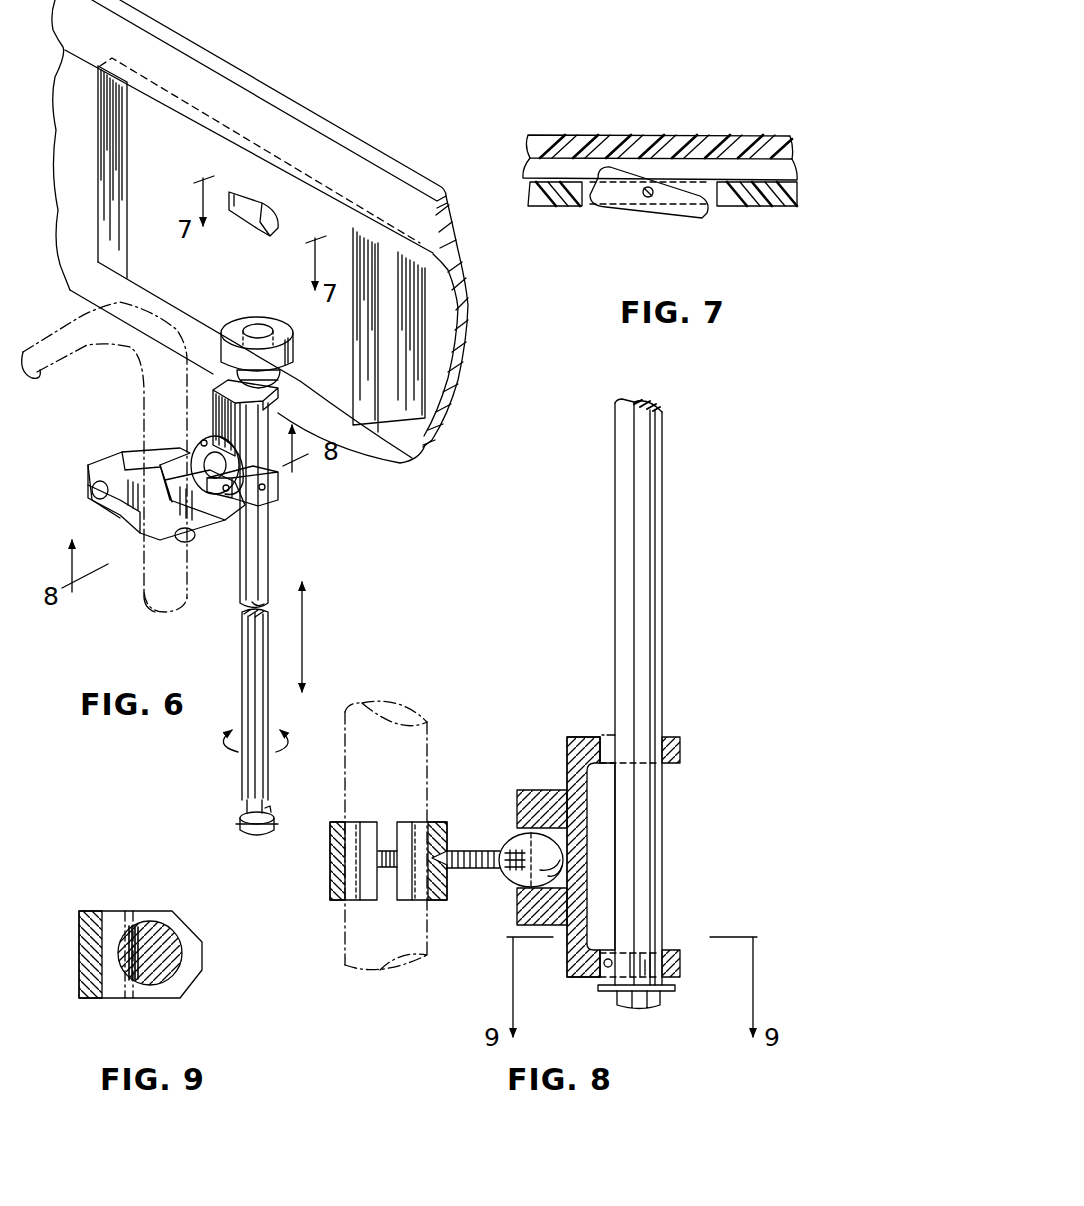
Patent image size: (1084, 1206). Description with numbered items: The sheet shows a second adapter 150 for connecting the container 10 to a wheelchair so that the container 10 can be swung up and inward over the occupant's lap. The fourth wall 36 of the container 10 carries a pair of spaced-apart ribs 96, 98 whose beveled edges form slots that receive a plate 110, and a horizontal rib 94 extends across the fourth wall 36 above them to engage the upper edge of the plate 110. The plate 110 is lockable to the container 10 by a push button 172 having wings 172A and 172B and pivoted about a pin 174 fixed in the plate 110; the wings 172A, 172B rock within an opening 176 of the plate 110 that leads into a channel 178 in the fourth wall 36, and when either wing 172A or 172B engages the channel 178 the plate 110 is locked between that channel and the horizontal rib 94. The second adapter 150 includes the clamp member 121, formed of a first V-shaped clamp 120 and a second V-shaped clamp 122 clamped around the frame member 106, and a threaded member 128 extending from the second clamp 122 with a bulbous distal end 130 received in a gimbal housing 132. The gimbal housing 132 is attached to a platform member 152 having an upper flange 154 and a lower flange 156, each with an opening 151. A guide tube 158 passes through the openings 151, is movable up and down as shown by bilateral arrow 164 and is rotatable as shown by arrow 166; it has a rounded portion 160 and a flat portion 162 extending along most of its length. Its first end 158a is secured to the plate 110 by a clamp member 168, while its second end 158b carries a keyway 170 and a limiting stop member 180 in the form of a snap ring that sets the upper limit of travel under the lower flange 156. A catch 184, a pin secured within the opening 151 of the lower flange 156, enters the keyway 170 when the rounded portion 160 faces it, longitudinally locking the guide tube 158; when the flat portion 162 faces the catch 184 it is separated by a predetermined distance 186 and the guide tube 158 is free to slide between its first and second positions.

In FIG. 6, the container 10 is at (333, 108).
In FIG. 7, the container 10 is at (679, 117).
In FIG. 6, the fourth wall 36 is at (462, 380).
In FIG. 7, the fourth wall 36 is at (750, 135).
In FIG. 6, the horizontal rib 94 is at (445, 255).
In FIG. 6, the rib 96 is at (98, 178).
In FIG. 6, the rib 98 is at (425, 317).
In FIG. 6, the frame member 106 is at (104, 457).
In FIG. 8, the frame member 106 is at (430, 720).
In FIG. 6, the plate 110 is at (328, 212).
In FIG. 7, the plate 110 is at (785, 196).
In FIG. 8, the first V-shaped clamp 120 is at (347, 905).
In FIG. 6, the clamp member 121 is at (98, 456).
In FIG. 8, the second V-shaped clamp 122 is at (438, 822).
In FIG. 8, the threaded member 128 is at (483, 851).
In FIG. 8, the distal end 130 is at (525, 880).
In FIG. 6, the gimbal housing 132 is at (195, 445).
In FIG. 8, the gimbal housing 132 is at (540, 790).
In FIG. 6, the second adapter 150 is at (352, 535).
In FIG. 8, the opening 151 is at (614, 725).
In FIG. 9, the opening 151 is at (118, 963).
In FIG. 6, the platform member 152 is at (293, 388).
In FIG. 8, the platform member 152 is at (583, 723).
In FIG. 6, the upper flange 154 is at (293, 392).
In FIG. 8, the upper flange 154 is at (682, 746).
In FIG. 6, the lower flange 156 is at (280, 498).
In FIG. 8, the lower flange 156 is at (682, 970).
In FIG. 6, the guide tube 158 is at (280, 560).
In FIG. 8, the guide tube 158 is at (665, 570).
In FIG. 6, the first end 158a is at (258, 327).
In FIG. 6, the second end 158b is at (258, 832).
In FIG. 8, the second end 158b is at (650, 1010).
In FIG. 6, the rounded portion 160 is at (268, 582).
In FIG. 8, the rounded portion 160 is at (665, 638).
In FIG. 9, the rounded portion 160 is at (182, 933).
In FIG. 6, the flat portion 162 is at (236, 586).
In FIG. 8, the flat portion 162 is at (615, 655).
In FIG. 9, the flat portion 162 is at (150, 930).
In FIG. 6, the bilateral arrow 164 is at (306, 630).
In FIG. 6, the arrow 166 is at (282, 748).
In FIG. 6, the clamp member 168 is at (228, 320).
In FIG. 6, the keyway 170 is at (222, 808).
In FIG. 8, the keyway 170 is at (662, 958).
In FIG. 6, the push button 172 is at (267, 212).
In FIG. 7, the push button 172 is at (662, 214).
In FIG. 7, the wing 172A is at (606, 206).
In FIG. 7, the wing 172B is at (676, 220).
In FIG. 7, the pin 174 is at (700, 208).
In FIG. 7, the opening 176 is at (740, 205).
In FIG. 7, the channel 178 is at (785, 172).
In FIG. 8, the limiting stop member 180 is at (608, 993).
In FIG. 8, the catch 184 is at (597, 980).
In FIG. 9, the catch 184 is at (128, 933).
In FIG. 9, the predetermined distance 186 is at (175, 998).